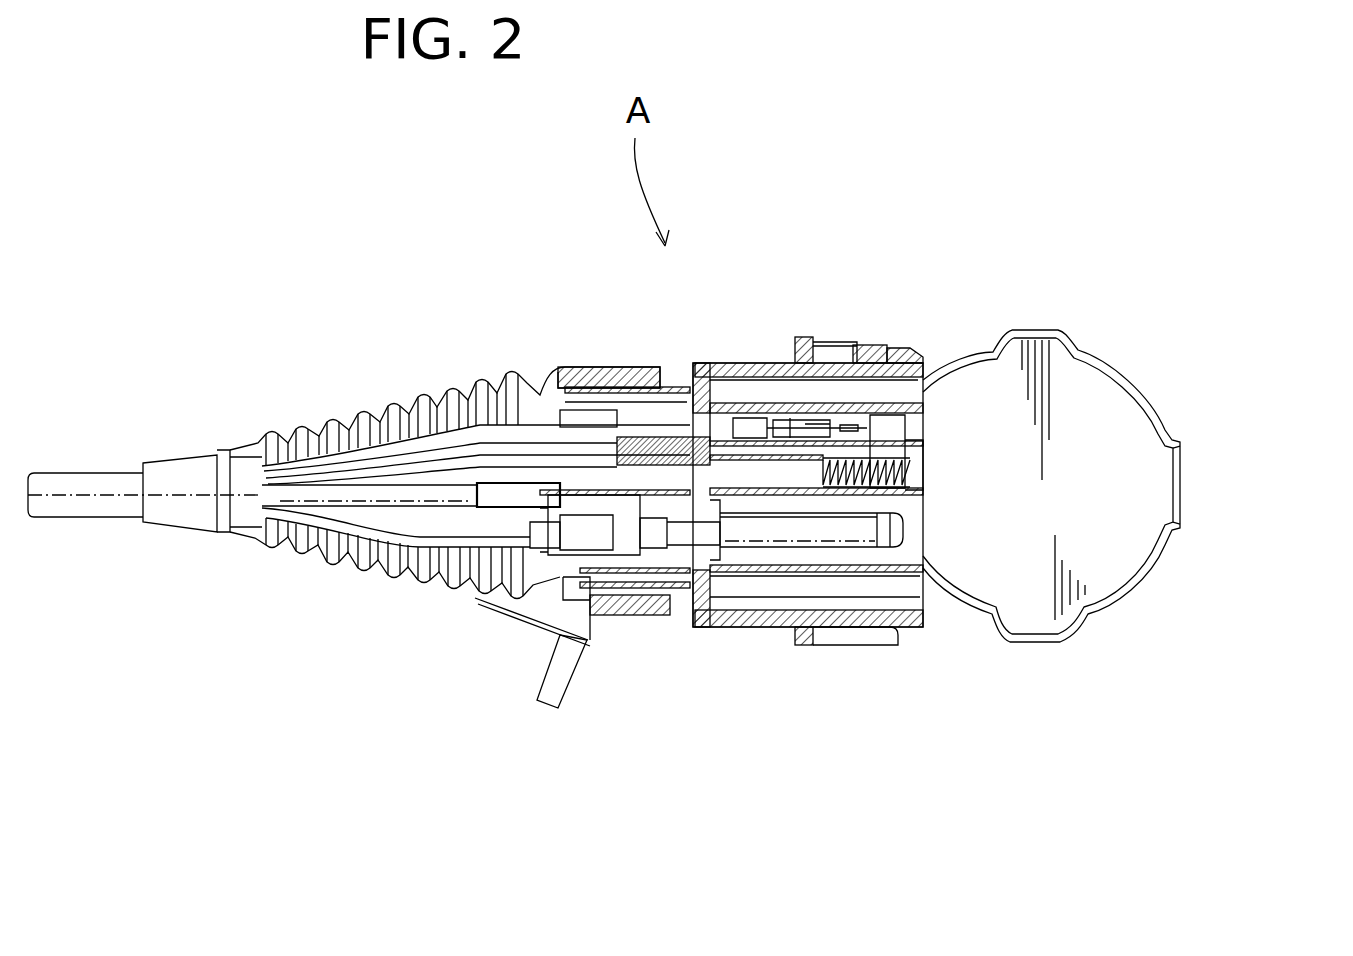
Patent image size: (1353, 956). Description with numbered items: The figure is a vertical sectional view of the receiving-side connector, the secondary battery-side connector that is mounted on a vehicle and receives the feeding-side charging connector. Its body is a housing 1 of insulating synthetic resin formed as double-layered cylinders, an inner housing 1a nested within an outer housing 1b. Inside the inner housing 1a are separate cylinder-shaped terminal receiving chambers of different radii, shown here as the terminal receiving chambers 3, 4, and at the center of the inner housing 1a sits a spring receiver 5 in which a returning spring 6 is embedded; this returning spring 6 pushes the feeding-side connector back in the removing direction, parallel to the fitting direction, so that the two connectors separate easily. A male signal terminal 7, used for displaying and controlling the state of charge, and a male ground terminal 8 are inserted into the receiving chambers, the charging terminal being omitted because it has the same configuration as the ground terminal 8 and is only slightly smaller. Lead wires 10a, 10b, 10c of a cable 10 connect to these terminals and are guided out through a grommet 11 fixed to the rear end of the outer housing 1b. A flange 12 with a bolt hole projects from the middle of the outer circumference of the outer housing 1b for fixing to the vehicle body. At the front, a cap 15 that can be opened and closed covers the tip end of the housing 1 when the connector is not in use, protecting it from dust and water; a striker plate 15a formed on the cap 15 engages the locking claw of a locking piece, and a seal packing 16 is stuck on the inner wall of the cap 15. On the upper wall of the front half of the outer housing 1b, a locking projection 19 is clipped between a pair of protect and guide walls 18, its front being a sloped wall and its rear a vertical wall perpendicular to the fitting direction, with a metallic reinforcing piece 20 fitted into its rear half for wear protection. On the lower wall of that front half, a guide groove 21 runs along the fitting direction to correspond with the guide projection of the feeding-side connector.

The housing 1 is at (727, 363).
The inner housing 1a is at (730, 600).
The outer housing 1b is at (677, 377).
The terminal receiving chamber 3 is at (907, 427).
The terminal receiving chamber 4 is at (903, 550).
The spring receiver 5 is at (907, 462).
The returning spring 6 is at (923, 470).
The male signal terminal 7 is at (863, 430).
The male ground terminal 8 is at (838, 535).
The cable 10 is at (76, 492).
The lead wire 10a is at (349, 494).
The lead wire 10b is at (435, 427).
The lead wire 10c is at (403, 537).
The grommet 11 is at (320, 418).
The flange 12 is at (800, 337).
The cap 15 is at (1117, 365).
The striker plate 15a is at (1180, 483).
The seal packing 16 is at (1113, 540).
The protect and guide wall 18 is at (830, 353).
The locking projection 19 is at (893, 347).
The metallic reinforcing piece 20 is at (863, 343).
The guide groove 21 is at (900, 627).